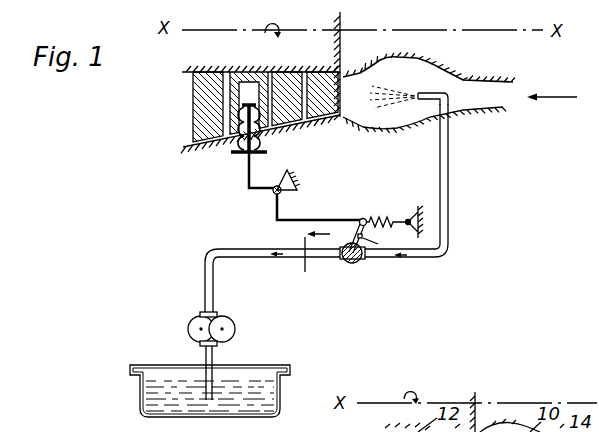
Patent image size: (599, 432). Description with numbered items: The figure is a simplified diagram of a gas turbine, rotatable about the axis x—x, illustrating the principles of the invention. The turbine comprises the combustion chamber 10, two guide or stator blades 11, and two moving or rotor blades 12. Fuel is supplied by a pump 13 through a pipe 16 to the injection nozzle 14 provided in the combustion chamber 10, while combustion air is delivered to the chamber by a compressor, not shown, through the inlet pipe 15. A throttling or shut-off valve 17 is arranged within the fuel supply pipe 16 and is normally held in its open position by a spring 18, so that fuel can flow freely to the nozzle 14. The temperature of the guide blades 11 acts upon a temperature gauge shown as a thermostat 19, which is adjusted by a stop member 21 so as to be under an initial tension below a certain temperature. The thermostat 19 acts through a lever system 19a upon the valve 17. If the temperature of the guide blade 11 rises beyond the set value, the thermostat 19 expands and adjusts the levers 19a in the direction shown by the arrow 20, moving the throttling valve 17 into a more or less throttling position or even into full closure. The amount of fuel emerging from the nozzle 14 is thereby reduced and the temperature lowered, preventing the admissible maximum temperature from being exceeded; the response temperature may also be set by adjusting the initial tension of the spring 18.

The combustion chamber 10 is at (432, 77).
The guide blades 11 is at (240, 80).
The moving blades 12 is at (192, 108).
The pump 13 is at (190, 325).
The injection nozzle 14 is at (451, 97).
The inlet pipe 15 is at (498, 106).
The fuel supply pipe 16 is at (450, 170).
The throttling or shut-off valve 17 is at (358, 264).
The spring 18 is at (388, 218).
The thermostat 19 is at (258, 131).
The lever system 19a is at (328, 219).
The arrow 20 is at (314, 263).
The stop member 21 is at (243, 156).